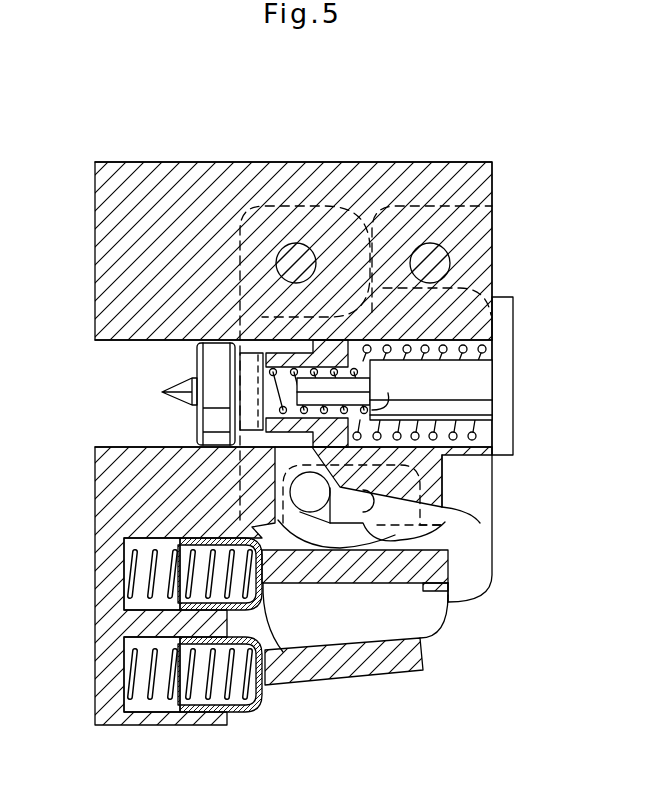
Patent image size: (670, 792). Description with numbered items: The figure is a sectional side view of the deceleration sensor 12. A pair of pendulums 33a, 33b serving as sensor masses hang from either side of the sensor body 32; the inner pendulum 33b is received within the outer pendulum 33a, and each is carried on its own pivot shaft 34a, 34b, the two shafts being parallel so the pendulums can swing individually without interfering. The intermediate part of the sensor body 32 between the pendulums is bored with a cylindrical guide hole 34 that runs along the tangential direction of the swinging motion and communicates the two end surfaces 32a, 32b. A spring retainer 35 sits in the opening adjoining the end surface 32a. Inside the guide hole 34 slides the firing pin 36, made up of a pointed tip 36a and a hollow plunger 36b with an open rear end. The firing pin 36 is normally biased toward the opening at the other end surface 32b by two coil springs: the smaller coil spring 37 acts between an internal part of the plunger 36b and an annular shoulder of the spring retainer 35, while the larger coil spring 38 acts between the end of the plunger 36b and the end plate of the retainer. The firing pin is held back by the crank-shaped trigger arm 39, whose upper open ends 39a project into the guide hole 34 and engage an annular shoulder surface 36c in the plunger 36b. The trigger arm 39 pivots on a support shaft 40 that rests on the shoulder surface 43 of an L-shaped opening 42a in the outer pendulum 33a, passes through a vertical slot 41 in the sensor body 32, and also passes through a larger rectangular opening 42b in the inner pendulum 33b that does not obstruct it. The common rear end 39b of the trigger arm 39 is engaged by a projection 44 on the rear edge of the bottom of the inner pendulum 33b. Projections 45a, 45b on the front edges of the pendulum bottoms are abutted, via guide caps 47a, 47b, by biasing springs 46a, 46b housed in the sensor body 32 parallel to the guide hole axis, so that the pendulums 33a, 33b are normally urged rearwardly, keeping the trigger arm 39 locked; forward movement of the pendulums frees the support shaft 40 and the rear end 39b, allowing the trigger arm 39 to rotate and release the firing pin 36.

The deceleration sensor 12 is at (535, 169).
The sensor body 32 is at (228, 162).
The end surface 32a is at (493, 330).
The end surface 32b is at (95, 340).
The outer pendulum 33a is at (472, 585).
The inner pendulum 33b is at (478, 522).
The guide hole 34 is at (128, 346).
The pivot shaft 34a is at (294, 243).
The pivot shaft 34b is at (431, 243).
The spring retainer 35 is at (487, 386).
The firing pin 36 is at (197, 418).
The pointed tip 36a is at (186, 386).
The plunger 36b is at (268, 355).
The annular shoulder surface 36c is at (303, 342).
The coil spring 37 is at (350, 370).
The coil spring 38 is at (490, 350).
The trigger arm 39 is at (385, 537).
The upper open ends 39a is at (278, 440).
The rear end 39b is at (447, 600).
The support shaft 40 is at (300, 507).
The vertical slot 41 is at (327, 535).
The L-shaped opening 42a is at (432, 500).
The rectangular opening 42b is at (443, 470).
The shoulder surface 43 is at (290, 491).
The projection 44 is at (440, 567).
The projection 45a is at (268, 688).
The projection 45b is at (268, 583).
The biasing spring 46a is at (130, 672).
The biasing spring 46b is at (130, 573).
The guide cap 47a is at (248, 712).
The guide cap 47b is at (243, 612).